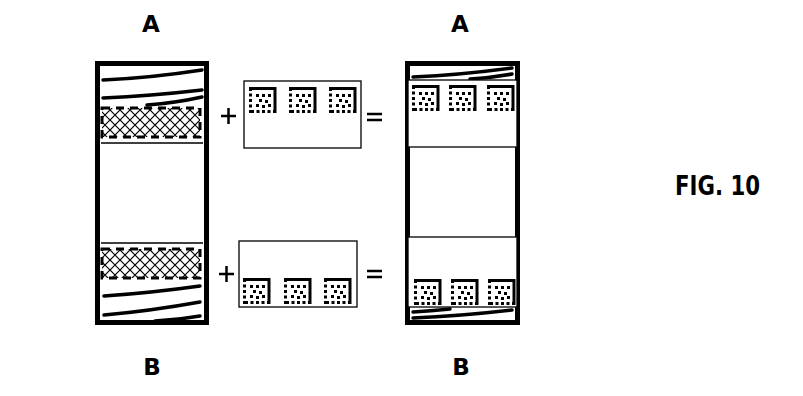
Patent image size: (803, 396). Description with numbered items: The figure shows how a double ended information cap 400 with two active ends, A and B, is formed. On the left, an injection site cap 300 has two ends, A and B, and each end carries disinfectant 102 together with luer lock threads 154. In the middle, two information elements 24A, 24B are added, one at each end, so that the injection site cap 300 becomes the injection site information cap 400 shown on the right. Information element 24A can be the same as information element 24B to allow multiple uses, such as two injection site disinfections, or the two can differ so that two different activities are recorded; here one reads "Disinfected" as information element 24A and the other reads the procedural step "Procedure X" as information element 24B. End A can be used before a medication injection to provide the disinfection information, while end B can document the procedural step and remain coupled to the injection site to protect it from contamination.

The luer lock threads 154 is at (100, 86).
The disinfectant 102 is at (100, 143).
The information element 24A is at (282, 80).
The information element 24B is at (287, 240).
The injection site cap 300 is at (150, 217).
The information cap 400 is at (519, 325).